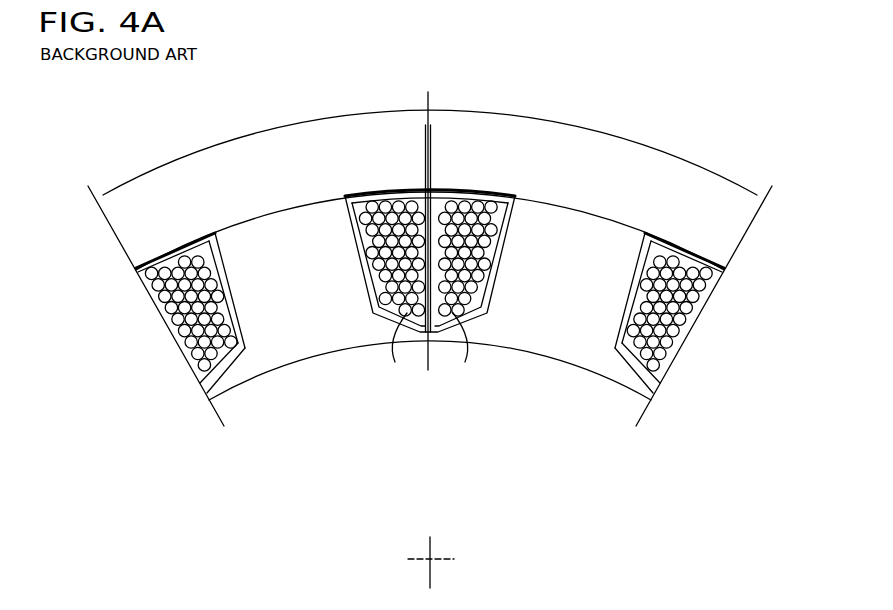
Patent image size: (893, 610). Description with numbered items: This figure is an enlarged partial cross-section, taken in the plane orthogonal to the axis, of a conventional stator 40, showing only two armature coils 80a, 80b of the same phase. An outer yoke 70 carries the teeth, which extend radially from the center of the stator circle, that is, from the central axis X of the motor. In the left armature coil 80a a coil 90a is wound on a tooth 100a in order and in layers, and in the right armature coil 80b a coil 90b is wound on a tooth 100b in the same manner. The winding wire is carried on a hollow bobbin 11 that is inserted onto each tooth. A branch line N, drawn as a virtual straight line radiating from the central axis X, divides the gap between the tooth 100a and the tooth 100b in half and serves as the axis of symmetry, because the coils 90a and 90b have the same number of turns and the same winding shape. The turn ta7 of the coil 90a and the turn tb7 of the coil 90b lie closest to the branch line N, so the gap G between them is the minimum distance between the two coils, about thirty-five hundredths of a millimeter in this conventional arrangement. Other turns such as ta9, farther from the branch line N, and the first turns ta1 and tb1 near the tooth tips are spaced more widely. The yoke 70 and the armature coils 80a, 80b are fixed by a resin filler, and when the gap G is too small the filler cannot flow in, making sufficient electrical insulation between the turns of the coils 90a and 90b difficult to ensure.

The stator 40 is at (690, 118).
The yoke 70 is at (128, 219).
The armature coil 80a is at (271, 205).
The armature coil 80b is at (589, 205).
The coil 90a is at (183, 342).
The coil 90b is at (677, 342).
The tooth 100a is at (327, 325).
The tooth 100b is at (533, 325).
The bobbin 11 is at (221, 366).
The turn ta1 is at (415, 318).
The turn ta7 is at (396, 205).
The turn ta9 is at (373, 268).
The turn tb1 is at (447, 318).
The turn tb7 is at (461, 213).
The gap G is at (383, 138).
The branch line N is at (428, 94).
The central axis X is at (430, 559).